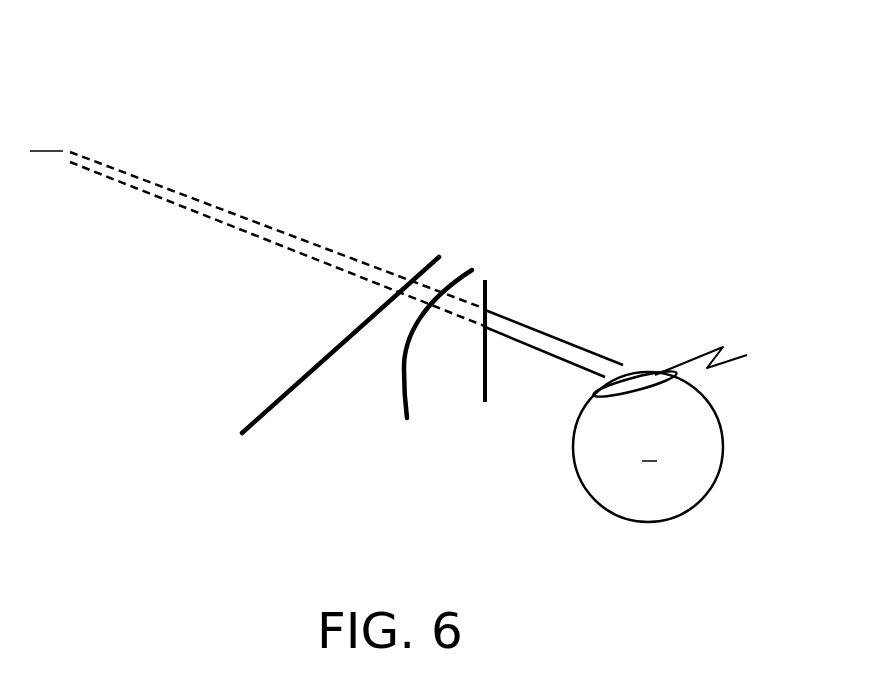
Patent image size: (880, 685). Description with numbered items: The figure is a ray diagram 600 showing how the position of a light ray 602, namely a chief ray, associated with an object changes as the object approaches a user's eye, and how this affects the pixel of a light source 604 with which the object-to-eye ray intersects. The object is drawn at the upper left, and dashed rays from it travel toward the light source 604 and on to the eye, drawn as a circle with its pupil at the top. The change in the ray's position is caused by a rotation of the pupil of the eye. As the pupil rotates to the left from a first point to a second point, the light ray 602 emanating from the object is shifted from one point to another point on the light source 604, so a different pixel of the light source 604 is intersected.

The ray diagram 600 is at (694, 54).
The light ray 602 is at (572, 332).
The light source 604 is at (473, 409).